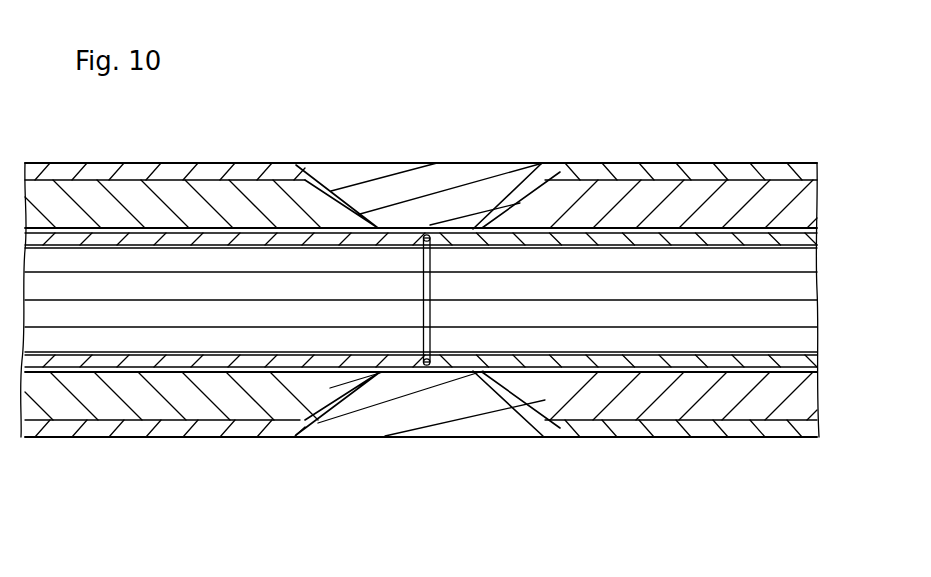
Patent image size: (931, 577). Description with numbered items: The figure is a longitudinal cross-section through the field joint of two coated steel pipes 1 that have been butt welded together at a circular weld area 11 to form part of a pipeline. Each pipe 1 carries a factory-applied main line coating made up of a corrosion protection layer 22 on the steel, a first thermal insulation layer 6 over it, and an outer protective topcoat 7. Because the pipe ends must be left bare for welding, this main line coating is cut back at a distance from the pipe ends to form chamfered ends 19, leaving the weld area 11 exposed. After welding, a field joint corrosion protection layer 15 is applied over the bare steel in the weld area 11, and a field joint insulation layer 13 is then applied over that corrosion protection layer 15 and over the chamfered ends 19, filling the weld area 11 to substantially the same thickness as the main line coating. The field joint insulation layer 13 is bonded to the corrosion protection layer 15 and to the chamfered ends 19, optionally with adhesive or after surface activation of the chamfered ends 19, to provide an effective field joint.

The steel pipe 1 is at (240, 362).
The first thermal insulation layer 6 is at (227, 208).
The outer protective topcoat 7 is at (720, 172).
The weld area 11 is at (421, 326).
The field joint insulation layer 13 is at (413, 188).
The field joint corrosion protection layer 15 is at (463, 230).
The chamfered end 19 is at (350, 202).
The corrosion protection layer 22 is at (150, 232).